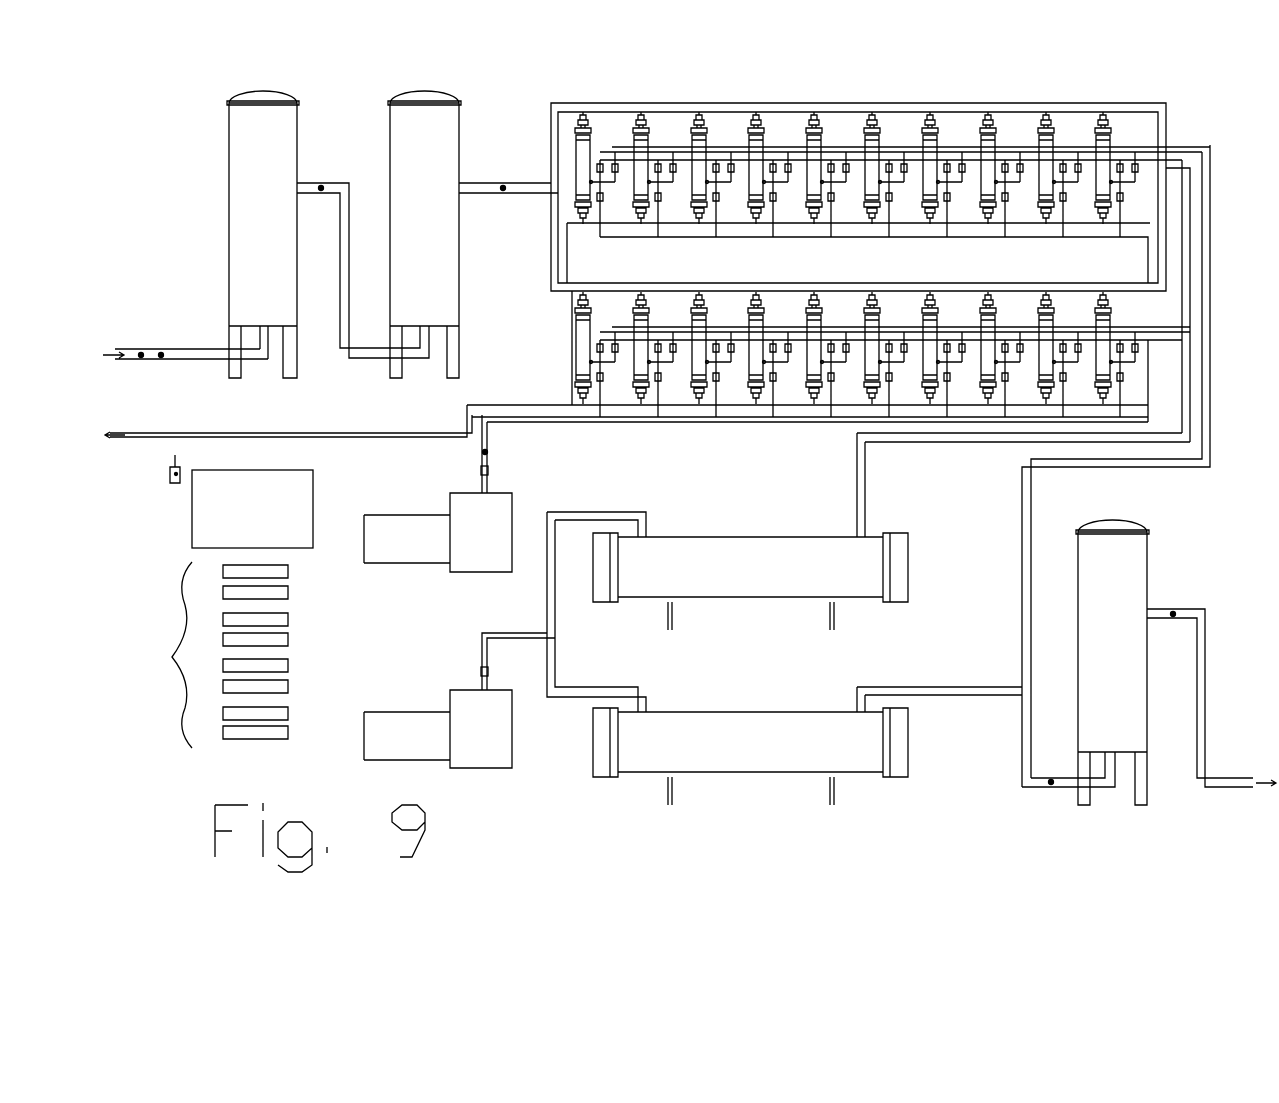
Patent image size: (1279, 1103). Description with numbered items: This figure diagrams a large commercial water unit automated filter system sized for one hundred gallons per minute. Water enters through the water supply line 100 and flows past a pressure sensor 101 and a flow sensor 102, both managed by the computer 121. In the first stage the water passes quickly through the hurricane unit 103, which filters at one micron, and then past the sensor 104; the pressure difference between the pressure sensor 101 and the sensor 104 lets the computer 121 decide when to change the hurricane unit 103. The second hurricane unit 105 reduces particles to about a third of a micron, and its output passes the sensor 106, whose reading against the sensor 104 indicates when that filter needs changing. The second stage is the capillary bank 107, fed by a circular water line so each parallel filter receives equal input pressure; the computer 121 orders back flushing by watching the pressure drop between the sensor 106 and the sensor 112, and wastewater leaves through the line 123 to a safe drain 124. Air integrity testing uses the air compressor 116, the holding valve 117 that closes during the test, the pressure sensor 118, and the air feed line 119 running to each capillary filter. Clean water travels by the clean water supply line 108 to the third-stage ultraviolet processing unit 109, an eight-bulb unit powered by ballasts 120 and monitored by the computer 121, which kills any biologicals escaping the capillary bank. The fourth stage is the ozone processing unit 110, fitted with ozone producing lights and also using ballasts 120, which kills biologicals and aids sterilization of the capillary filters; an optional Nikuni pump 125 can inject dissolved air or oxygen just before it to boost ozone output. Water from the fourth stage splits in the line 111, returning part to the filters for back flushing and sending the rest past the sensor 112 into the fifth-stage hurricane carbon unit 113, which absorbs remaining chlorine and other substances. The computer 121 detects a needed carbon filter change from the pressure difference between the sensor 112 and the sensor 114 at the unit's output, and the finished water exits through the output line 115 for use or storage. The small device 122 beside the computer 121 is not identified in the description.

The water supply line 100 is at (113, 350).
The pressure sensor 101 is at (141, 355).
The flow sensor 102 is at (162, 354).
The hurricane unit 103 is at (263, 234).
The sensor 104 is at (321, 188).
The hurricane unit 105 is at (424, 234).
The sensor 106 is at (503, 188).
The capillary bank 107 is at (845, 103).
The clean water supply line 108 is at (1187, 290).
The ultraviolet processing unit 109 is at (727, 612).
The ozone processing unit 110 is at (750, 756).
The line 111 is at (1212, 236).
The sensor 112 is at (1051, 782).
The hurricane carbon unit 113 is at (1112, 662).
The sensor 114 is at (1173, 614).
The output line 115 is at (1203, 739).
The air compressor 116 is at (438, 532).
The holding valve 117 is at (481, 470).
The pressure sensor 118 is at (486, 452).
The air feed line 119 is at (793, 420).
The ballasts 120 is at (207, 655).
The computer 121 is at (252, 509).
The sensor 122 is at (172, 486).
The line 123 is at (572, 362).
The safe drain 124 is at (148, 437).
The Nikuni pump 125 is at (459, 700).